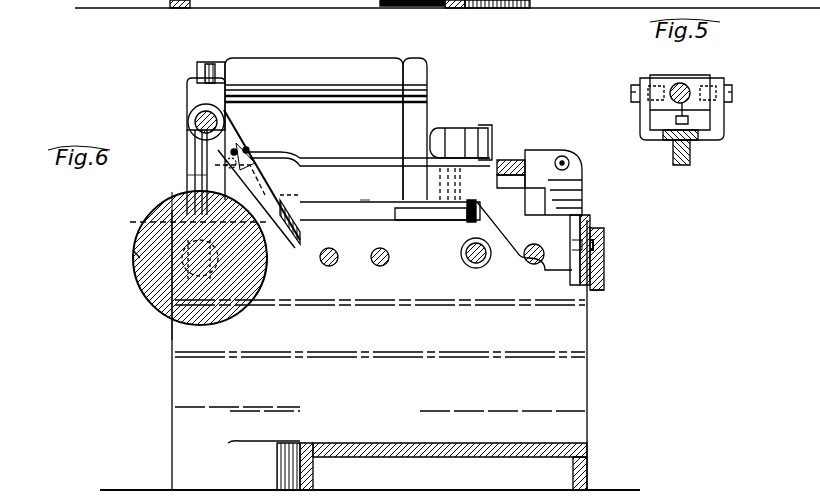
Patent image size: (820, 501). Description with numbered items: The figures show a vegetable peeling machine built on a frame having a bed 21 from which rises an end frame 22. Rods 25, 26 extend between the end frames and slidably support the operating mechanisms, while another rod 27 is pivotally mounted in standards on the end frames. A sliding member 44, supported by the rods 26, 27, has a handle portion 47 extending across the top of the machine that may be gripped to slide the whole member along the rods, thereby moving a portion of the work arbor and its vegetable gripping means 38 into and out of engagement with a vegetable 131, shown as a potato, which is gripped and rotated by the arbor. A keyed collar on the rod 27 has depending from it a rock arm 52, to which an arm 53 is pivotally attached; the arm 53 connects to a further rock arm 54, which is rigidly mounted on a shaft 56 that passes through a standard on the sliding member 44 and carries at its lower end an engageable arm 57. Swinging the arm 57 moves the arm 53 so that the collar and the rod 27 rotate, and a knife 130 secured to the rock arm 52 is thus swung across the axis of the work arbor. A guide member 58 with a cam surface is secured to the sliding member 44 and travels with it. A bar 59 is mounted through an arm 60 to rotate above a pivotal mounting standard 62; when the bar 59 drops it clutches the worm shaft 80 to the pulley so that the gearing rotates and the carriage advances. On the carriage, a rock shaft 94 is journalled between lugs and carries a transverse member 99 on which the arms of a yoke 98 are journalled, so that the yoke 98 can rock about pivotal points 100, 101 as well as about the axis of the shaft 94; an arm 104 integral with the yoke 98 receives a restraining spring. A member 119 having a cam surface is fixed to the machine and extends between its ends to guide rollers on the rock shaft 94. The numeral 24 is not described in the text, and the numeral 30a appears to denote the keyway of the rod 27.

In FIG. 6, the bed 21 is at (585, 443).
In FIG. 6, the end frame 22 is at (590, 338).
In FIG. 6, the pin 24 is at (329, 266).
In FIG. 6, the rod 25 is at (380, 266).
In FIG. 6, the rod 26 is at (533, 265).
In FIG. 6, the rod 27 is at (203, 134).
In FIG. 6, the pivot pin 30a is at (200, 120).
In FIG. 6, the vegetable gripping means 38 is at (135, 290).
In FIG. 6, the sliding member 44 is at (196, 175).
In FIG. 6, the handle portion 47 is at (313, 57).
In FIG. 6, the rock arm 52 is at (232, 143).
In FIG. 6, the arm 53 is at (334, 156).
In FIG. 6, the rock arm 54 is at (493, 140).
In FIG. 6, the shaft 56 is at (605, 262).
In FIG. 6, the engageable arm 57 is at (428, 216).
In FIG. 6, the guide member 58 is at (590, 220).
In FIG. 6, the bar 59 is at (510, 160).
In FIG. 6, the arm 60 is at (548, 158).
In FIG. 6, the pivotal mounting standard 62 is at (582, 186).
In FIG. 6, the worm shaft 80 is at (476, 268).
In FIG. 5, the rock shaft 94 is at (684, 86).
In FIG. 5, the yoke 98 is at (718, 136).
In FIG. 5, the transverse member 99 is at (704, 108).
In FIG. 5, the pivotal point 100 is at (636, 88).
In FIG. 5, the pivotal point 101 is at (730, 92).
In FIG. 5, the arm 104 is at (682, 150).
In FIG. 6, the member 119 is at (604, 280).
In FIG. 6, the knife 130 is at (299, 190).
In FIG. 6, the vegetable 131 is at (137, 250).